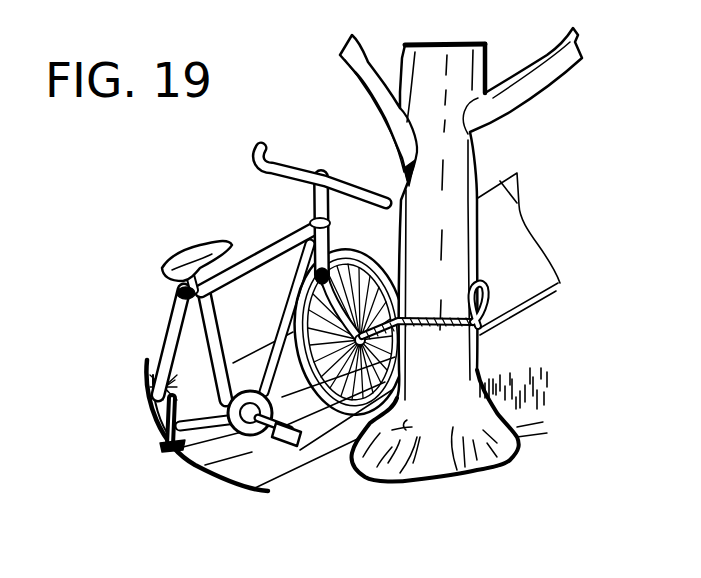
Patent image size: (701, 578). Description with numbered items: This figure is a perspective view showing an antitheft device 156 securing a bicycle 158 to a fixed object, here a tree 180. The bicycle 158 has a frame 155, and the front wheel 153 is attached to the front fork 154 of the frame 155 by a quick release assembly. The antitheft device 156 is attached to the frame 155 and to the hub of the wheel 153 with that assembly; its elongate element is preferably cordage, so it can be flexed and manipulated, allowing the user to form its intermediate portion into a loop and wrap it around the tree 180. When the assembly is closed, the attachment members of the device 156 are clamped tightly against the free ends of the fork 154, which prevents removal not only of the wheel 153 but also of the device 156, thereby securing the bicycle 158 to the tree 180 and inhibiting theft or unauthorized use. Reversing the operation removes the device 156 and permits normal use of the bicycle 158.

The wheel 153 is at (279, 327).
The fork 154 is at (322, 268).
The frame 155 is at (268, 242).
The antitheft device 156 is at (487, 284).
The bicycle 158 is at (186, 252).
The tree 180 is at (457, 164).